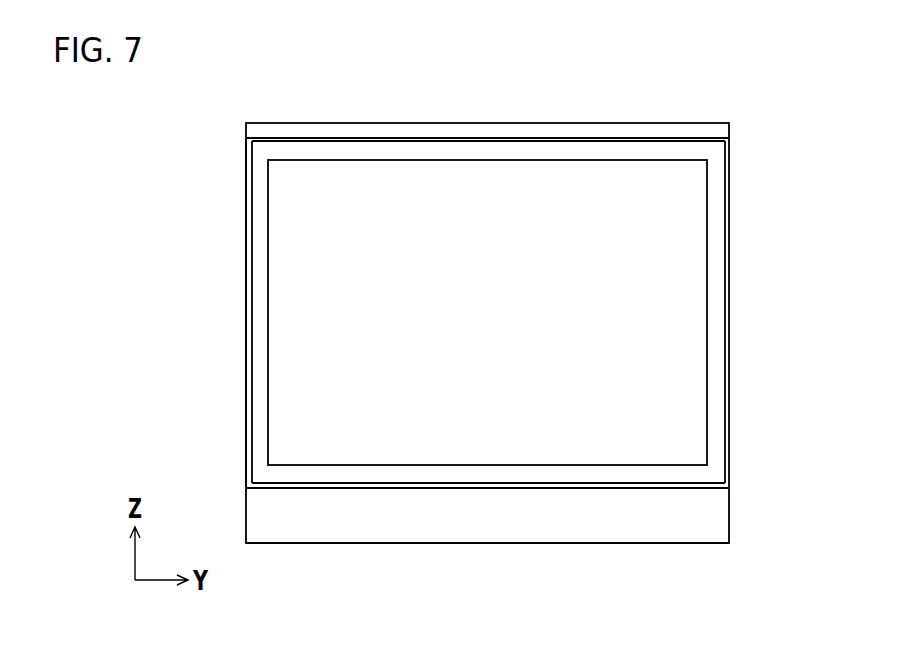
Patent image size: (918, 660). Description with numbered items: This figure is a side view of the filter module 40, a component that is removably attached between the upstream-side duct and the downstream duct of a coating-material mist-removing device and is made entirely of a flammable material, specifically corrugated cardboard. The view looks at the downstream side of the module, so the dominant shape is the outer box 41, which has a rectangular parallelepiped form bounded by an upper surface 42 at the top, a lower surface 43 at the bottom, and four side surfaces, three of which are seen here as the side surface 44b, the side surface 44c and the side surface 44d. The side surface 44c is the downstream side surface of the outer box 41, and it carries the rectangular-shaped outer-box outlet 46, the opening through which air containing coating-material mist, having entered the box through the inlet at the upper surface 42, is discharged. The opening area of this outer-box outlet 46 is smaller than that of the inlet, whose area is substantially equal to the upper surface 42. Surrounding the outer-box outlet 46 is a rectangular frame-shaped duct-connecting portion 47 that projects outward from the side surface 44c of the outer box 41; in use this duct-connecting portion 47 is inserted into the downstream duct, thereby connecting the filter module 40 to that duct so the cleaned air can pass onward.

The filter module 40 is at (229, 85).
The outer box 41 is at (703, 511).
The upper surface 42 is at (684, 116).
The lower surface 43 is at (655, 552).
The side surface 44b is at (237, 308).
The side surface 44c is at (247, 221).
The side surface 44d is at (743, 318).
The outer-box outlet 46 is at (268, 357).
The duct-connecting portion 47 is at (372, 140).